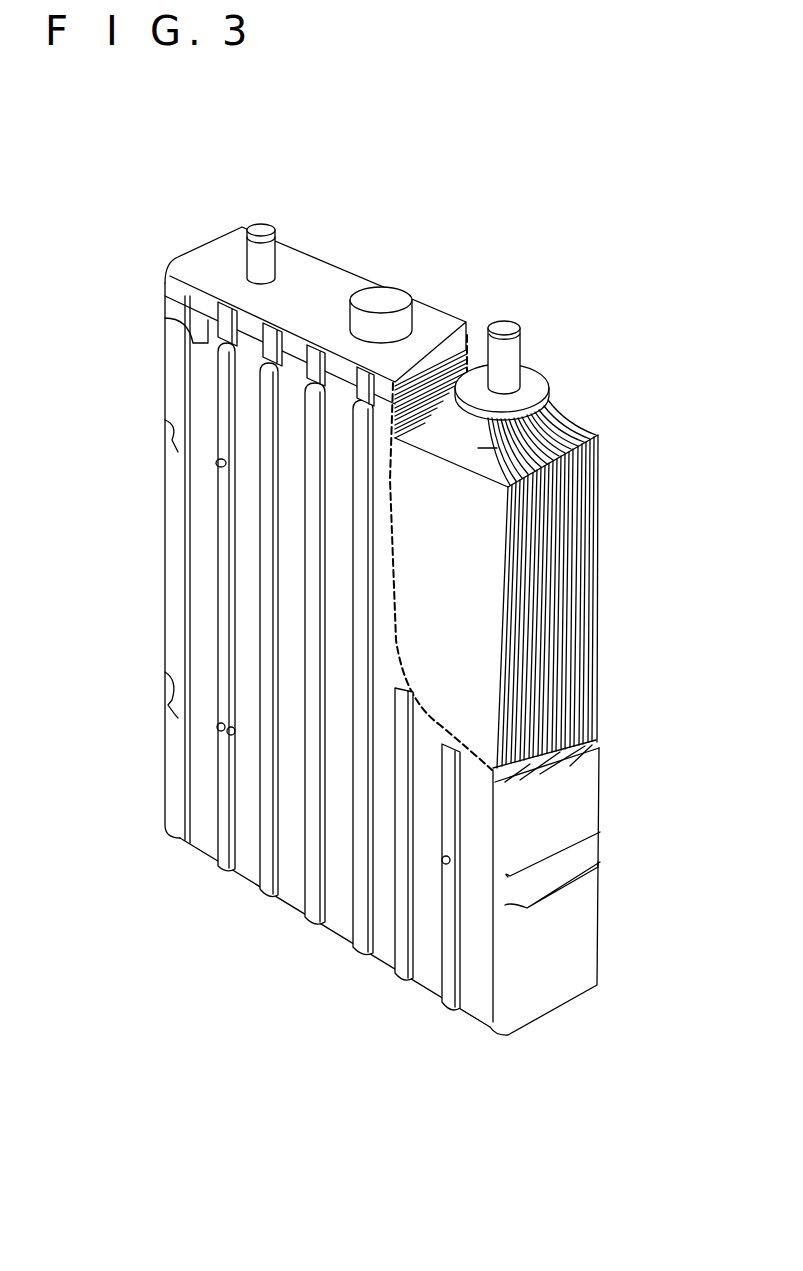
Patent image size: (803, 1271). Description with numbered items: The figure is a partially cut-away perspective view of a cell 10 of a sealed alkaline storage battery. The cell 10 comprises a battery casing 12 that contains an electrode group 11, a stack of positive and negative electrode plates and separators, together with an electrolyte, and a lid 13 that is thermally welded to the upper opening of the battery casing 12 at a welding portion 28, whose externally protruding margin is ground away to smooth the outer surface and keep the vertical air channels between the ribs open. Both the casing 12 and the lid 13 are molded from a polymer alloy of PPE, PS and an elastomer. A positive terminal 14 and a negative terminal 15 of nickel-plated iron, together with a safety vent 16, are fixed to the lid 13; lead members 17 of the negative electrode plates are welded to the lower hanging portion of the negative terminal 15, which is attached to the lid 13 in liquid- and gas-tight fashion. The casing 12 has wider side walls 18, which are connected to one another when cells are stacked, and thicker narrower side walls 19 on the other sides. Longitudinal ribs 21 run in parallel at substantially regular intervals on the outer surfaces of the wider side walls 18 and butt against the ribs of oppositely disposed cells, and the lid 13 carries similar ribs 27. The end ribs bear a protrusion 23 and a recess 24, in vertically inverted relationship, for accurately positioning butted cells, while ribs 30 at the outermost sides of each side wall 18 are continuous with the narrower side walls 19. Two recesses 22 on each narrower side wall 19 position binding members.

The cell 10 is at (146, 267).
The electrode group 11 is at (567, 508).
The battery casing 12 is at (165, 386).
The lid 13 is at (320, 272).
The positive terminal 14 is at (262, 230).
The negative terminal 15 is at (503, 327).
The safety vent 16 is at (385, 298).
The lead members 17 is at (565, 424).
The wider side walls 18 is at (243, 780).
The narrower side walls 19 is at (573, 806).
The longitudinal ribs 21 is at (223, 596).
The recesses 22 is at (558, 876).
The protrusion 23 is at (215, 464).
The recess 24 is at (217, 723).
The ribs 27 is at (163, 297).
The welding portion 28 is at (163, 330).
The ribs 30 is at (172, 511).